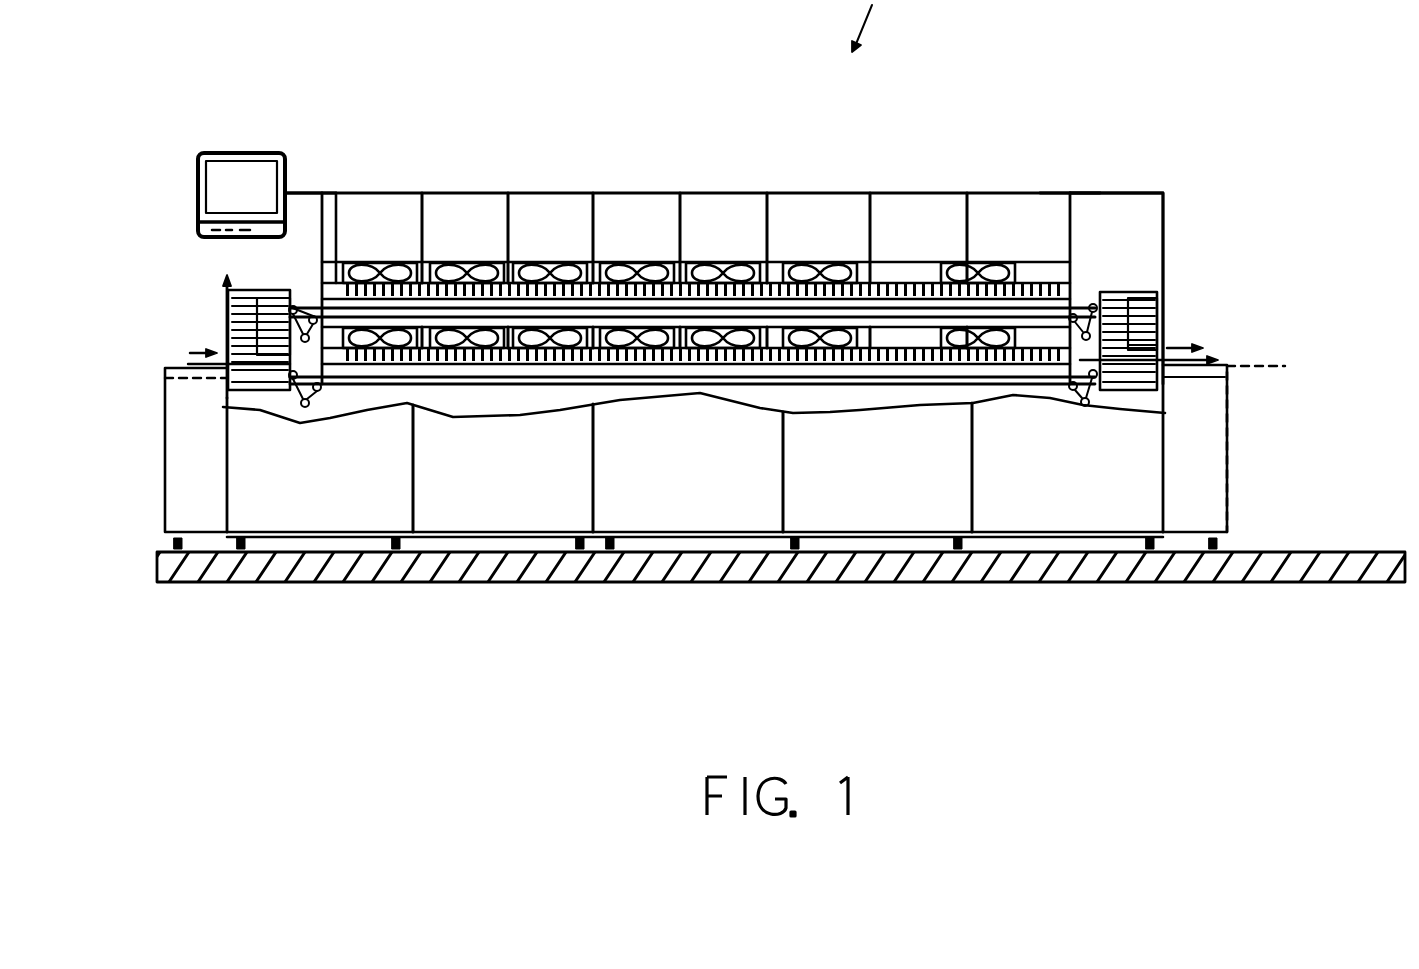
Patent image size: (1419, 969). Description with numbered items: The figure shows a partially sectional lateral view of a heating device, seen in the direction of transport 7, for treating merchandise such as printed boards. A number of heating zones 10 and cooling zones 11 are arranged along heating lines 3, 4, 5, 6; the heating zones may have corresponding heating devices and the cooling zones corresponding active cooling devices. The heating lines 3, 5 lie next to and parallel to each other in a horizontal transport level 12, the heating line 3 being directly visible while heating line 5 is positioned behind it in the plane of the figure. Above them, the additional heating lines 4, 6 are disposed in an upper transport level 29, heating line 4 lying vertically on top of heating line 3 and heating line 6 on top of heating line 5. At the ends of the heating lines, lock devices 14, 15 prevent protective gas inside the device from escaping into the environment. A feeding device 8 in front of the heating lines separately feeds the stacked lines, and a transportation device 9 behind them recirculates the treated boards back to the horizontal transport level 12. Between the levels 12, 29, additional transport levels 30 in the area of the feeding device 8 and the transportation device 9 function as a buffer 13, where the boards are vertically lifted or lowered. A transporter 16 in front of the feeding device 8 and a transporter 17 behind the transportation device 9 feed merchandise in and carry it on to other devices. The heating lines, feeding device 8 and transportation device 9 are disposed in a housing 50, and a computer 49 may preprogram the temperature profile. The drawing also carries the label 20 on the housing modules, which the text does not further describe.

The heating line 3 is at (646, 379).
The heating line 4 is at (633, 248).
The heating line 5 is at (650, 386).
The heating line 6 is at (633, 240).
The direction of transport 7 is at (205, 354).
The feeding device 8 is at (260, 403).
The transportation device 9 is at (1140, 392).
The heating zone 10 is at (463, 262).
The cooling zone 11 is at (553, 262).
The horizontal transport level 12 is at (1290, 358).
The buffer 13 is at (1147, 338).
The lock device 14 is at (327, 193).
The lock device 15 is at (1068, 193).
The transporter 16 is at (172, 359).
The transporter 17 is at (1232, 354).
The housing modules / partition walls 20 is at (880, 300).
The upper transport level 29 is at (500, 300).
The additional transport level 30 is at (1147, 292).
The computer 49 is at (243, 170).
The housing 50 is at (1118, 192).